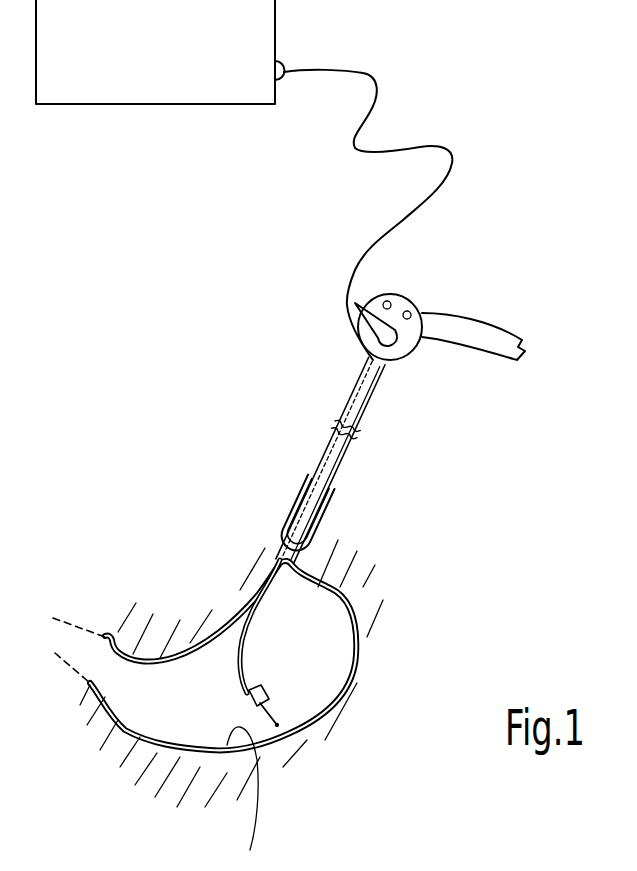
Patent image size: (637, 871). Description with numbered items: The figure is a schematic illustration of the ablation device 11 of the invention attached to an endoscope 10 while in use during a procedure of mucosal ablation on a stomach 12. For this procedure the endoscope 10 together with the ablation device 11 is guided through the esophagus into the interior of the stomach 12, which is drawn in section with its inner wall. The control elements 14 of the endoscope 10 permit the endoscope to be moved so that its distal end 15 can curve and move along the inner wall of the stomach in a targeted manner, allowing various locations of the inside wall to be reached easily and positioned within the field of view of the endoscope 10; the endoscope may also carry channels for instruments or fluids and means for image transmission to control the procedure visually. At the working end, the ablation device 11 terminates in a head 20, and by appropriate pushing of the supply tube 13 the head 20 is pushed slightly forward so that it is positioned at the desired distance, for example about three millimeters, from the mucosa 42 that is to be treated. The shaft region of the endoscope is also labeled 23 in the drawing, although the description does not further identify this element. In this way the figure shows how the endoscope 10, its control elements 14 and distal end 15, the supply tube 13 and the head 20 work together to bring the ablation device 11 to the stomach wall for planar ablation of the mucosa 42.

The endoscope 10 is at (397, 390).
The ablation device 11 is at (247, 702).
The stomach 12 is at (383, 637).
The supply tube 13 is at (320, 510).
The control elements 14 is at (383, 288).
The distal end 15 is at (260, 663).
The head 20 is at (277, 725).
The endoscope shaft 23 is at (360, 387).
The mucosa 42 is at (248, 799).